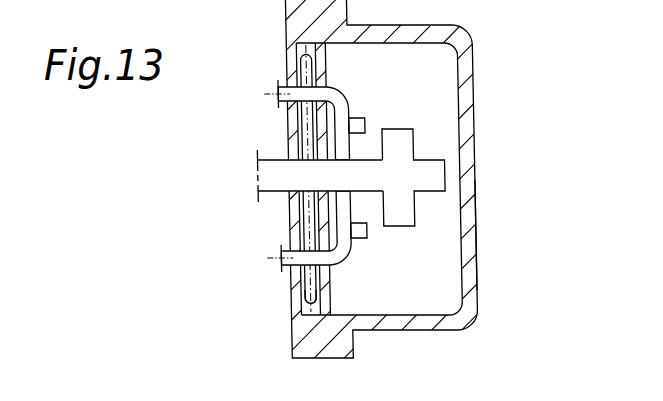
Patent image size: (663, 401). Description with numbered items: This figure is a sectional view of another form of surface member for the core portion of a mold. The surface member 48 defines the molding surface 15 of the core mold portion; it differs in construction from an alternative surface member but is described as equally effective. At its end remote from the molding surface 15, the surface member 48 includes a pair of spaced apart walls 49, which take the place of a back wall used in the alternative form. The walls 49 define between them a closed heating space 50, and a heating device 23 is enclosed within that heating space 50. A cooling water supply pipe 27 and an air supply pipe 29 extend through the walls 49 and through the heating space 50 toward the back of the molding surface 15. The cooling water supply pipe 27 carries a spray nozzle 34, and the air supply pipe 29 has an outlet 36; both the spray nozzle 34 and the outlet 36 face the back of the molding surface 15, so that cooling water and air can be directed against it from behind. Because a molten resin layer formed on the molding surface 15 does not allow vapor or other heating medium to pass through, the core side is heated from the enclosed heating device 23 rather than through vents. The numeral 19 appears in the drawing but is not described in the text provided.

The molding surface 15 is at (477, 97).
The surface member 48 is at (477, 232).
The heating space 50 is at (308, 57).
The spaced apart walls 49 is at (294, 304).
The inlet conduit 19 is at (292, 122).
The heating device 23 is at (288, 220).
The cooling water supply pipe 27 is at (280, 264).
The air supply pipe 29 is at (258, 163).
The outlet 36 is at (408, 128).
The spray nozzle 34 is at (358, 118).